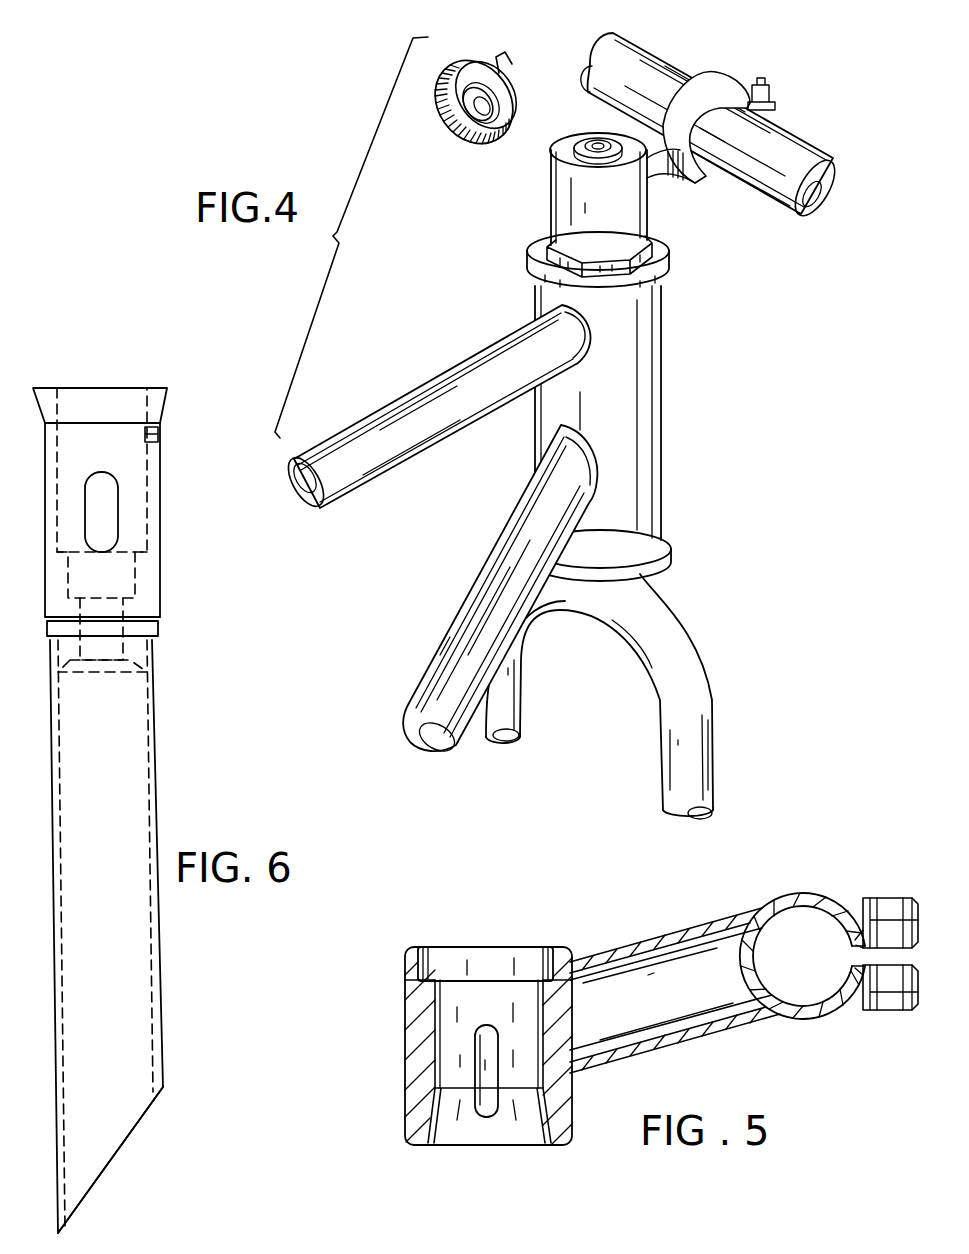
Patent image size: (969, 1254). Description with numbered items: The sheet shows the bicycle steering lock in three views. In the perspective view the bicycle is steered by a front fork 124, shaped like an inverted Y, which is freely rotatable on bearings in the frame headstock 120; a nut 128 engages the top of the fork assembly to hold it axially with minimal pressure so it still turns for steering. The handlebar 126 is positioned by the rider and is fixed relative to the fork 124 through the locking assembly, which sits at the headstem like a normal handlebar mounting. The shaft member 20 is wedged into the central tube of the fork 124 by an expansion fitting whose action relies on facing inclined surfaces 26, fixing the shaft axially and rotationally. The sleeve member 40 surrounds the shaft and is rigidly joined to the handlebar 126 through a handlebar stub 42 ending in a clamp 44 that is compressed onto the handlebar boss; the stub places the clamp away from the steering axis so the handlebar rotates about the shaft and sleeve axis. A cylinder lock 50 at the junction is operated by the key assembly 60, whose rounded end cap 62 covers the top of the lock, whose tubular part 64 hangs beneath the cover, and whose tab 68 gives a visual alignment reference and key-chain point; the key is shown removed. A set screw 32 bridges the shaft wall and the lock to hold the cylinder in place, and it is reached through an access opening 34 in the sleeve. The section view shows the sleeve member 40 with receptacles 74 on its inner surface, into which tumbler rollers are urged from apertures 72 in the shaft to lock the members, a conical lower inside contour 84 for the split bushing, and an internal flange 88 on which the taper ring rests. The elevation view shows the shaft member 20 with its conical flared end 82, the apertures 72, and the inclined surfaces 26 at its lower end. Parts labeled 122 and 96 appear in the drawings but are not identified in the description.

In FIG. 4, the shaft member 20 is at (563, 152).
In FIG. 6, the shaft member 20 is at (167, 1029).
In FIG. 6, the inclined surface 26 is at (128, 1138).
In FIG. 6, the set screw 32 is at (158, 437).
In FIG. 5, the access opening 34 is at (410, 988).
In FIG. 4, the sleeve member 40 is at (563, 208).
In FIG. 5, the sleeve member 40 is at (410, 1149).
In FIG. 5, the handlebar stub 42 is at (712, 1047).
In FIG. 5, the clamp 44 is at (838, 907).
In FIG. 4, the cylinder lock 50 is at (590, 133).
In FIG. 4, the key assembly 60 is at (466, 56).
In FIG. 4, the rounded end cap 62 is at (445, 112).
In FIG. 4, the tubular part 64 is at (487, 114).
In FIG. 4, the tab 68 is at (508, 60).
In FIG. 6, the aperture 72 is at (118, 512).
In FIG. 5, the receptacle 74 is at (478, 1068).
In FIG. 6, the conical flared end 82 is at (165, 398).
In FIG. 5, the conical inside contour 84 is at (502, 1071).
In FIG. 5, the internal flange 88 is at (548, 950).
In FIG. 6, the collar ring 96 is at (160, 623).
In FIG. 4, the frame headstock 120 is at (654, 410).
In FIG. 4, the frame tubes 122 is at (350, 492).
In FIG. 4, the front fork 124 is at (710, 752).
In FIG. 4, the handlebar 126 is at (806, 158).
In FIG. 4, the nut 128 is at (667, 258).